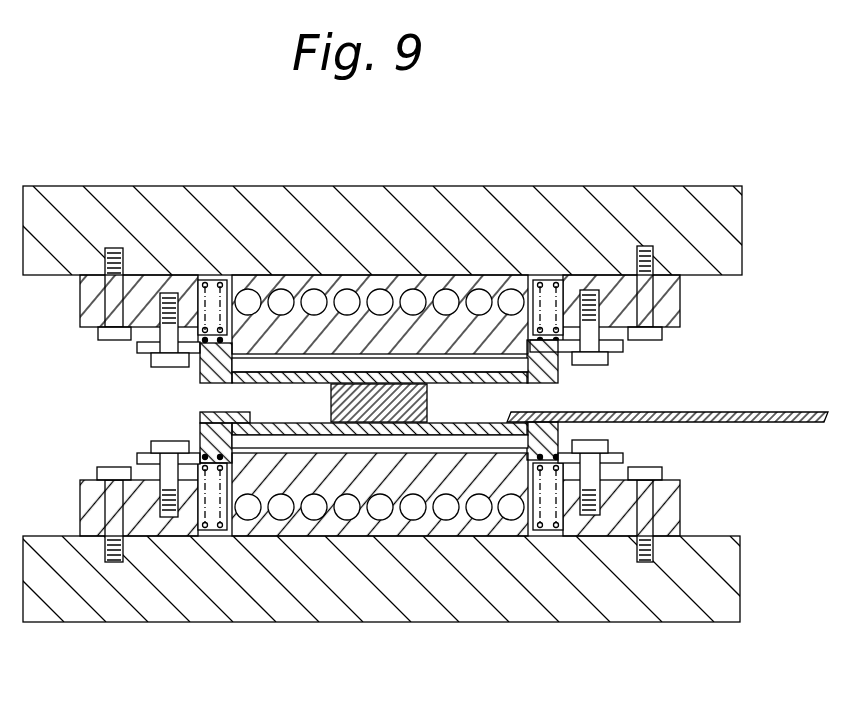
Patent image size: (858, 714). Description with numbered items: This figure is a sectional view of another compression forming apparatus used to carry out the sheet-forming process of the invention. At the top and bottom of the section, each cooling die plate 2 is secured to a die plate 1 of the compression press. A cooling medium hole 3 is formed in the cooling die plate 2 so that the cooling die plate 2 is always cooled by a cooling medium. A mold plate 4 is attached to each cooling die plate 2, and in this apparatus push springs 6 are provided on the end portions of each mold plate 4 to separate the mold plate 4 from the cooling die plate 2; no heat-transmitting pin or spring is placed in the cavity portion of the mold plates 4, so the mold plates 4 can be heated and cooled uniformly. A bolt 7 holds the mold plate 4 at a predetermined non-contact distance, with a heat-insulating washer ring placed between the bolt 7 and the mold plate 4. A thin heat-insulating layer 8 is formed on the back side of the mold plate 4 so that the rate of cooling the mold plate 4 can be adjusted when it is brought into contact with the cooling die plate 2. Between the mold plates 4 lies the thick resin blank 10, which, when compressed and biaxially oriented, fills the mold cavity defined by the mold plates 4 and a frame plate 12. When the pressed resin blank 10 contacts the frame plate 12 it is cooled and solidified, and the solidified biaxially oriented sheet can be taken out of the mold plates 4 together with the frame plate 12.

The die plate 1 is at (681, 186).
The cooling die plate 2 is at (678, 301).
The cooling medium hole 3 is at (388, 518).
The mold plate 4 is at (200, 434).
The push spring 6 is at (210, 538).
The bolt 7 is at (608, 443).
The heat-insulating layer 8 is at (303, 358).
The resin blank 10 is at (427, 400).
The frame plate 12 is at (721, 410).